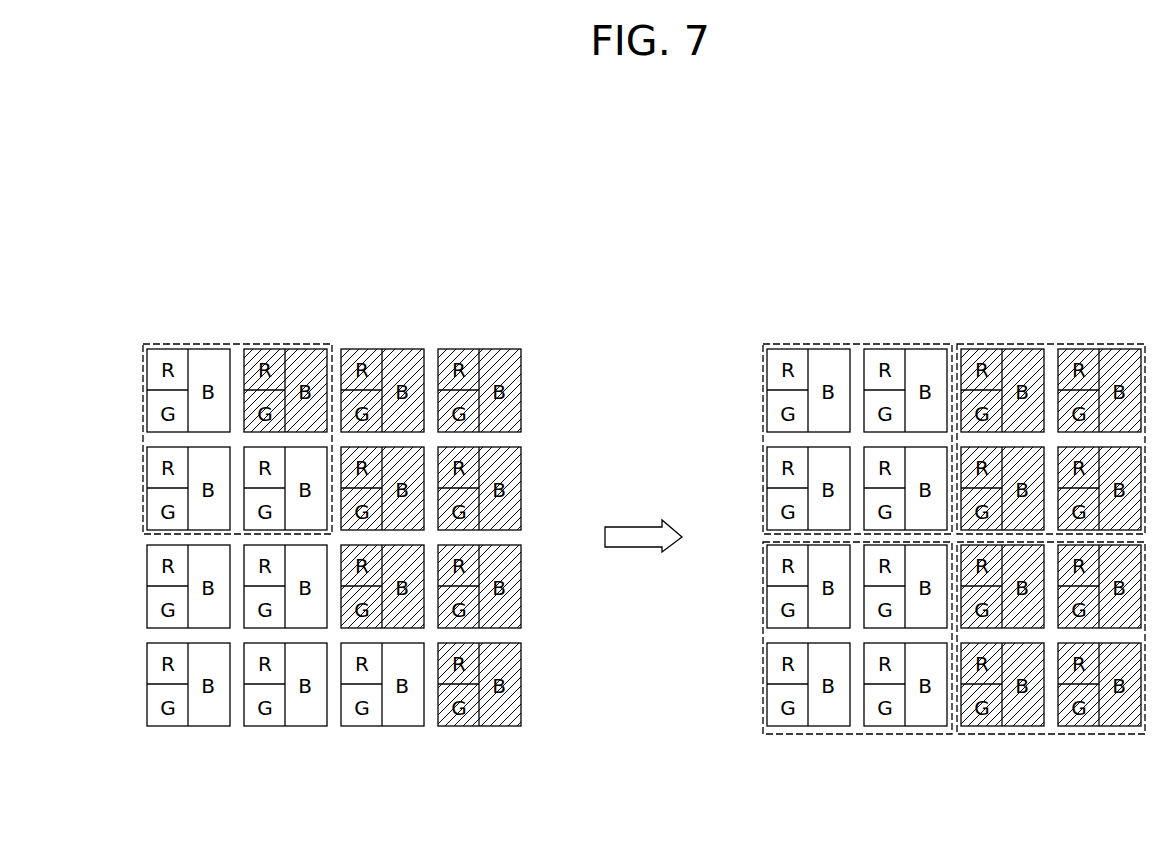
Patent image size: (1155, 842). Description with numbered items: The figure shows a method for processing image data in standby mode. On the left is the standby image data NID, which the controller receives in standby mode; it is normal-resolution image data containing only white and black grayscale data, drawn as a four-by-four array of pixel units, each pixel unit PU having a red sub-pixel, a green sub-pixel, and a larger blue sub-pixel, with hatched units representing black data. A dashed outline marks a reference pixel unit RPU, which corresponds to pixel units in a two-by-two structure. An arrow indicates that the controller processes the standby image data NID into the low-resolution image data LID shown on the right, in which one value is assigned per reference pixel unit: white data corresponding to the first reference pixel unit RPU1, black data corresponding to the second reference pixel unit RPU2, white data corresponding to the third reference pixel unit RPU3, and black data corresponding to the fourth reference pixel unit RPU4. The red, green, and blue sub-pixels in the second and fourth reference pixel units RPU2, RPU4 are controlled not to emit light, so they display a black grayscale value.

The pixel unit PU is at (147, 406).
The reference pixel unit RPU is at (233, 343).
The standby image data NID is at (340, 318).
The low-resolution image data LID is at (960, 318).
The first reference pixel unit RPU1 is at (853, 343).
The second reference pixel unit RPU2 is at (1049, 343).
The third reference pixel unit RPU3 is at (853, 735).
The fourth reference pixel unit RPU4 is at (1050, 735).